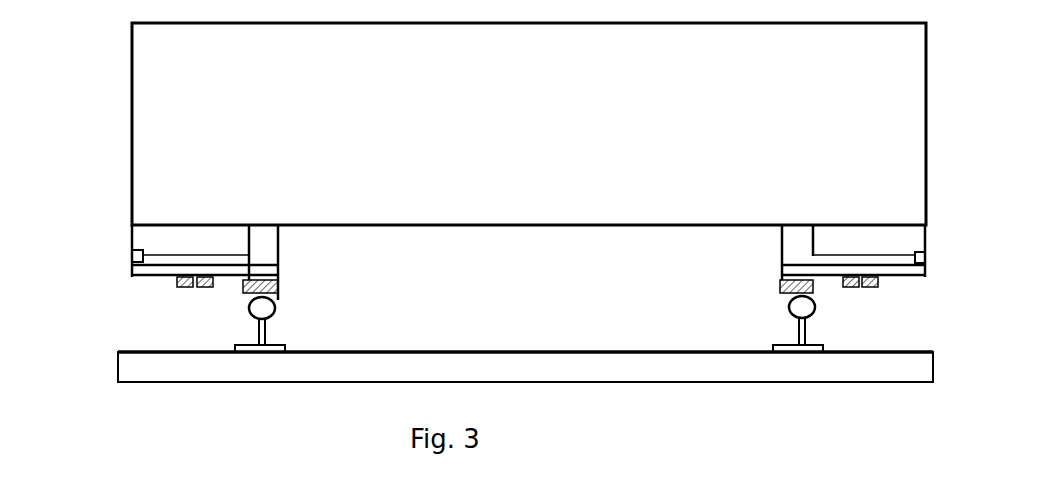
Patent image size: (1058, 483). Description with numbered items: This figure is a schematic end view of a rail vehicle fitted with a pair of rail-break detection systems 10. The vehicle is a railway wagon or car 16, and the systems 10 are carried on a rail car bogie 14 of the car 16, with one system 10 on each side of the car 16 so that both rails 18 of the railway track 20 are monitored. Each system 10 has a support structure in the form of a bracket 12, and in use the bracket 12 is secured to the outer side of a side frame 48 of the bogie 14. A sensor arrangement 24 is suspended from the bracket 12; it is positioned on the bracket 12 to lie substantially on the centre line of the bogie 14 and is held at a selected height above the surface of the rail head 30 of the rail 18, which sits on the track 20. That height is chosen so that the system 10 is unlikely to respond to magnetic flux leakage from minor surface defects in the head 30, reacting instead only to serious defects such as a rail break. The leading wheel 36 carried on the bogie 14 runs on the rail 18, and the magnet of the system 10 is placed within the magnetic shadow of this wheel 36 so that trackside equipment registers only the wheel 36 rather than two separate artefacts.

The system for detecting a break in a rail 10 is at (311, 267).
The bracket 12 is at (168, 279).
The rail car bogie 14 is at (106, 237).
The railway wagon or car 16 is at (104, 72).
The rail 18 is at (272, 313).
The railway track 20 is at (840, 343).
The sensor arrangement 24 is at (278, 287).
The rail head 30 is at (250, 311).
The leading wheel 36 is at (262, 250).
The side frame 48 is at (137, 257).